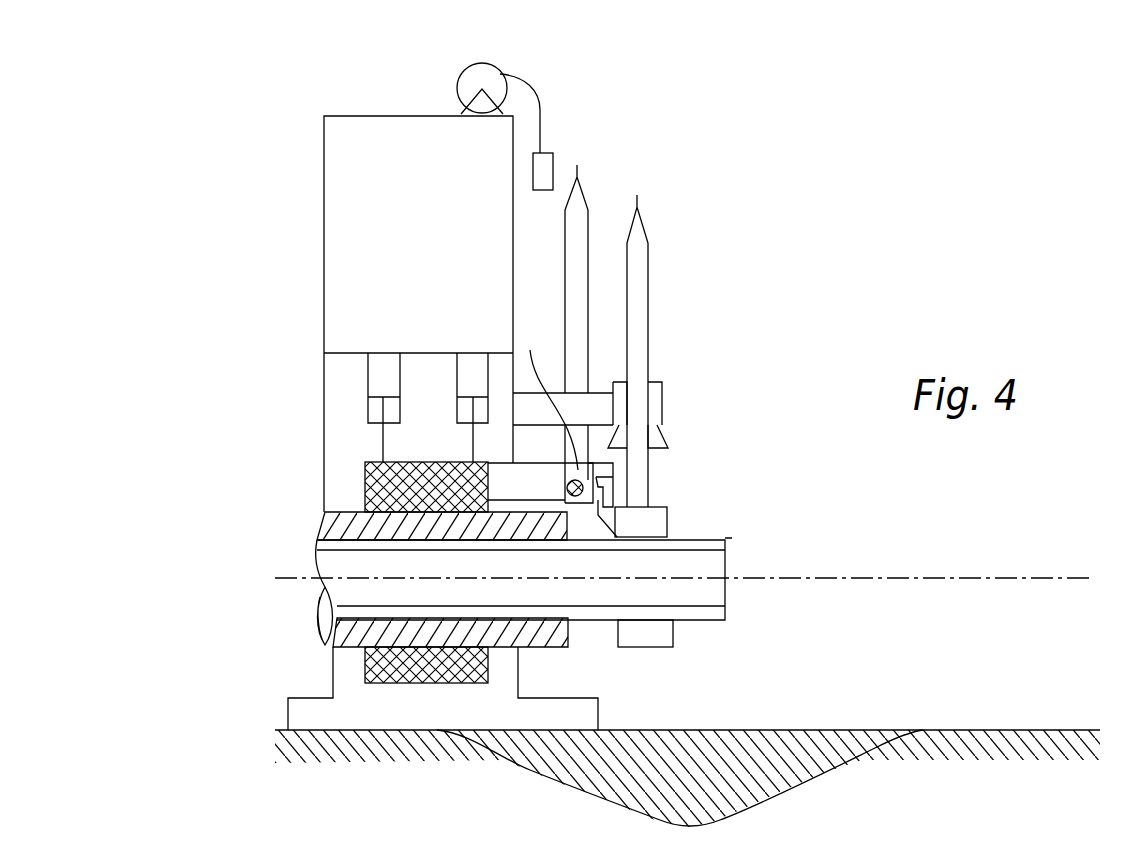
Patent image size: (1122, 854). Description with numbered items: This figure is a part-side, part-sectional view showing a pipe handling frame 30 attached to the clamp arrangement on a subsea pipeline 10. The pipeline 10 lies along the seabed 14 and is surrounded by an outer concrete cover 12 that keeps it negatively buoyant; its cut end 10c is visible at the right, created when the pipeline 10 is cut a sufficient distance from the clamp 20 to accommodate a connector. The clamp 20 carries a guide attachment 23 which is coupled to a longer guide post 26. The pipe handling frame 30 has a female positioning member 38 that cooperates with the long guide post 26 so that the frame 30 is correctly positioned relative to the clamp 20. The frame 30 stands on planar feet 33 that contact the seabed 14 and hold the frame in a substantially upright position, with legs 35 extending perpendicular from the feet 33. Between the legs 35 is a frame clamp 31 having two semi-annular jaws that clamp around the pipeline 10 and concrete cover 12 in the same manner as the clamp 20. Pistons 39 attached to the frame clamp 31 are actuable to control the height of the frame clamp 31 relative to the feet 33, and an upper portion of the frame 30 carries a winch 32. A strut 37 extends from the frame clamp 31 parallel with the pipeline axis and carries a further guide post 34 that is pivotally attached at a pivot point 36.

The subsea pipeline 10 is at (740, 528).
The cut end of the pipeline 10c is at (725, 605).
The outer concrete cover 12 is at (323, 527).
The seabed 14 is at (1015, 743).
The clamp 20 is at (663, 521).
The guide attachment 23 is at (657, 505).
The long guide post 26 is at (637, 247).
The pipe handling frame 30 is at (293, 235).
The frame clamp 31 is at (417, 683).
The winch 32 is at (487, 72).
The planar feet 33 is at (323, 717).
The guide post 34 is at (575, 213).
The legs 35 is at (343, 485).
The pivot point 36 is at (553, 409).
The strut 37 is at (540, 498).
The female positioning member 38 is at (664, 403).
The pistons 39 is at (377, 377).